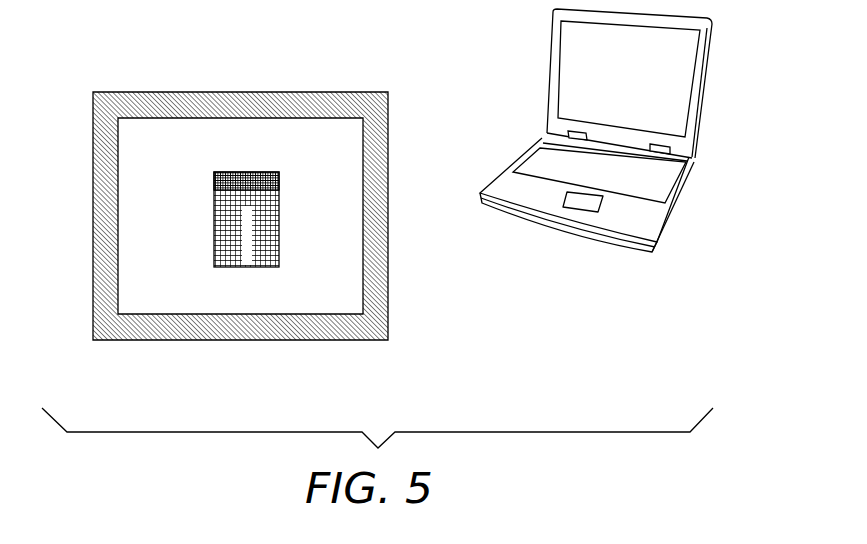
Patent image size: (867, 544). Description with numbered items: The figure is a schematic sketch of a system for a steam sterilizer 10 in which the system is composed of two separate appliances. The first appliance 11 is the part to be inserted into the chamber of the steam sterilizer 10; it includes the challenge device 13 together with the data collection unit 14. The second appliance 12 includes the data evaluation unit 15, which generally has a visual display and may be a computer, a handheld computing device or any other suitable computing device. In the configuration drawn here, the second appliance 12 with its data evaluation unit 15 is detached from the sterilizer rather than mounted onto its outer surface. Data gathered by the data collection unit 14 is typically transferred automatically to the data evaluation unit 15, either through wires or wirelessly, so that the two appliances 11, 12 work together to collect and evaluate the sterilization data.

The steam sterilizer 10 is at (214, 345).
The appliance 11 is at (203, 216).
The second appliance 12 is at (596, 210).
The challenge device 13 is at (243, 244).
The data collection unit 14 is at (203, 178).
The data evaluation unit 15 is at (583, 257).